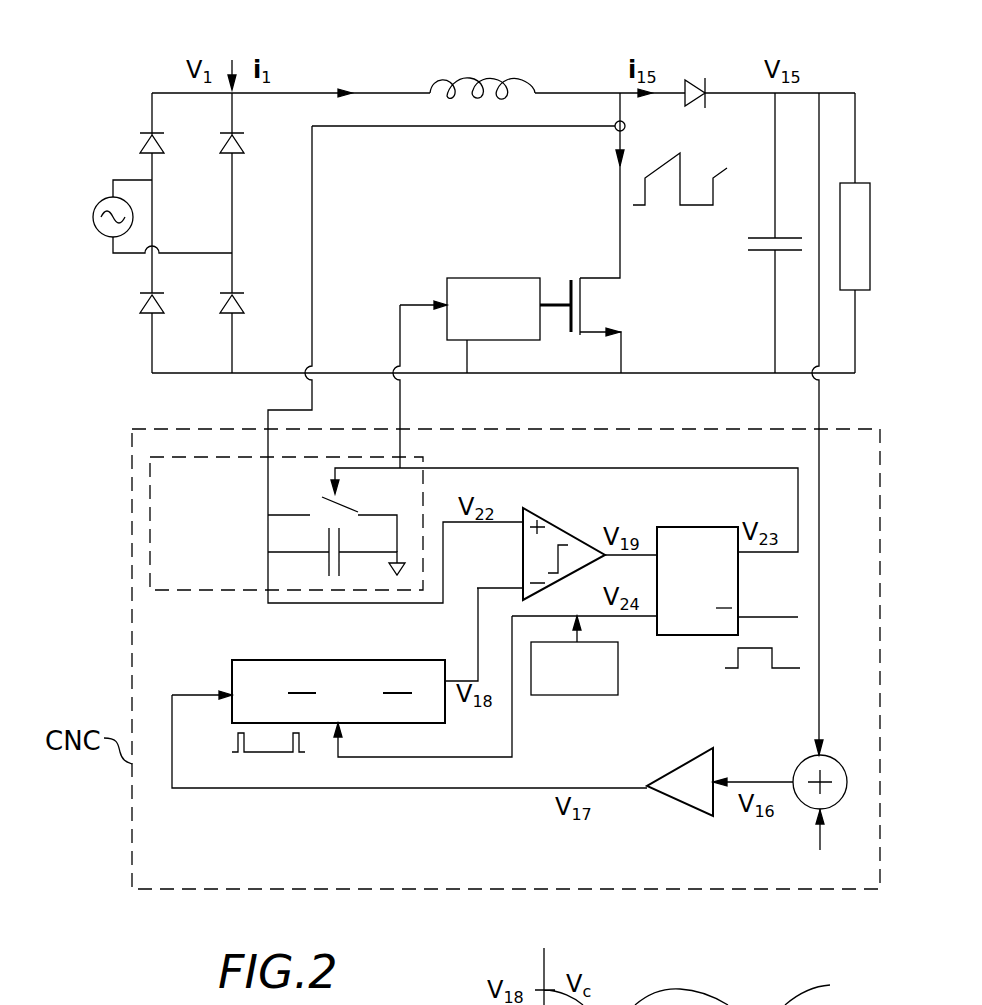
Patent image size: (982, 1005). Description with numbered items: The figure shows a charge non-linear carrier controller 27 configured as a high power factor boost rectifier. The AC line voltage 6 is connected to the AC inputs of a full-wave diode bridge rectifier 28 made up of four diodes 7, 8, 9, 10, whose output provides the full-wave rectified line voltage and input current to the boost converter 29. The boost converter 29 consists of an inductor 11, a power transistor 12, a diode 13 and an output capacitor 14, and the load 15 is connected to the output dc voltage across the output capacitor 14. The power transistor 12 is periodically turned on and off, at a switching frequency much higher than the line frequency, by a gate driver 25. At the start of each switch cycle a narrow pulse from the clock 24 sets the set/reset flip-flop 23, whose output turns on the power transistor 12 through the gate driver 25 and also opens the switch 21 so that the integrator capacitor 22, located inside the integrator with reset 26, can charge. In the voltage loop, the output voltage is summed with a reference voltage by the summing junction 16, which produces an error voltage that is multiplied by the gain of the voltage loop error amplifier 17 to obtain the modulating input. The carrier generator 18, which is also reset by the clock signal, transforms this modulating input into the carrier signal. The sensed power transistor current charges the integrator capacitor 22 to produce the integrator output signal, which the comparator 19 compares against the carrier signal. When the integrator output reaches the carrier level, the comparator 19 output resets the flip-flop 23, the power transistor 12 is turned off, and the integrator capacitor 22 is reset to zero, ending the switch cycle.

The AC line voltage 6 is at (110, 233).
The diode 7 is at (142, 140).
The diode 8 is at (245, 144).
The diode 9 is at (158, 304).
The diode 10 is at (238, 304).
The inductor 11 is at (516, 80).
The power transistor 12 is at (580, 309).
The diode 13 is at (698, 104).
The output capacitor 14 is at (762, 250).
The load 15 is at (868, 238).
The summing junction 16 is at (806, 761).
The voltage loop error amplifier 17 is at (696, 764).
The carrier generator 18 is at (232, 663).
The comparator 19 is at (522, 553).
The switch 21 is at (356, 511).
The integrator capacitor 22 is at (328, 538).
The set/reset flip-flop 23 is at (716, 527).
The clock 24 is at (555, 695).
The gate driver 25 is at (500, 278).
The integrator with reset 26 is at (165, 457).
The charge non-linear carrier controller 27 is at (686, 40).
The full-wave diode bridge rectifier 28 is at (232, 62).
The boost converter 29 is at (452, 66).